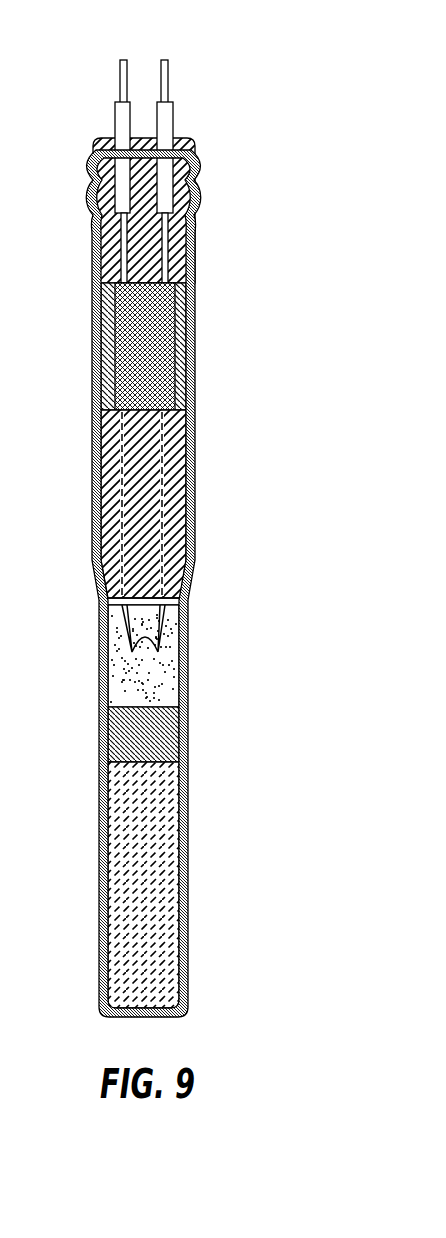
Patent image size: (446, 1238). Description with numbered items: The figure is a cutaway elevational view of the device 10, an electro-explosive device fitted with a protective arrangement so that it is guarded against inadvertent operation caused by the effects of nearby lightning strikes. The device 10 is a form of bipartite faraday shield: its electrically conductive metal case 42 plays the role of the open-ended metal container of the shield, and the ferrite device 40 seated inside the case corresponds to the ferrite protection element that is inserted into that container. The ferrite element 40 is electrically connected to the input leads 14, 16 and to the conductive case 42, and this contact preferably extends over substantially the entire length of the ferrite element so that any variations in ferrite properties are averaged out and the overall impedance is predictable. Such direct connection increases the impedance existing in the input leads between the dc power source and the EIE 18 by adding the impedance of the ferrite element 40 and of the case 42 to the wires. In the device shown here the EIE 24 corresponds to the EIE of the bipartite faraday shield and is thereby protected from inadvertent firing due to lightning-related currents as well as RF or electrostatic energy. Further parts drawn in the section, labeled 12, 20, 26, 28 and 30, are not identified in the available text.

The device 10 is at (177, 538).
The outer sheath 12 is at (197, 382).
The input lead 14 is at (163, 918).
The input lead 16 is at (163, 735).
The EIE 18 is at (165, 682).
The insulated wire section 20 is at (175, 520).
The EIE 24 is at (150, 635).
The sealing plug 26 is at (198, 229).
The lead wire 28 is at (120, 75).
The lead wire 30 is at (168, 75).
The ferrite element 40 is at (100, 350).
The metal case 42 is at (177, 328).